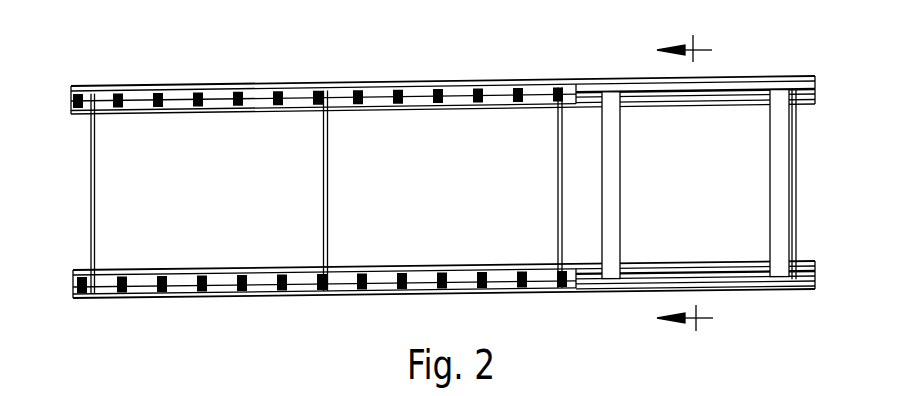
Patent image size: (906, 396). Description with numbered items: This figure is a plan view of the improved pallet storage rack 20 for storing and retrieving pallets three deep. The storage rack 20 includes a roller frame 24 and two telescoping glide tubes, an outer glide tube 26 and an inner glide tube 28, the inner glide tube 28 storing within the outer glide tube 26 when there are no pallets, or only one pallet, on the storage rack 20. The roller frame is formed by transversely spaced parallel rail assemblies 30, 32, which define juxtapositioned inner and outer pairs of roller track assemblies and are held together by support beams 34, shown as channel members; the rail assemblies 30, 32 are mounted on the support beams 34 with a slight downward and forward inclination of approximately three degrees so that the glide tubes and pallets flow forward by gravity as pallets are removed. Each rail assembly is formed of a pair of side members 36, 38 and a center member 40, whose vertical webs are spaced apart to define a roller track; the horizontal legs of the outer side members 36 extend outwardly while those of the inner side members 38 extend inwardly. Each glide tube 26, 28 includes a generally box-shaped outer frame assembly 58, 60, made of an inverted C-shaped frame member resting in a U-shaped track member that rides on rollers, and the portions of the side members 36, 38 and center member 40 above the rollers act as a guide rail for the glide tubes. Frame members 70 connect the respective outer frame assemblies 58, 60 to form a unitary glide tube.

The pallet storage rack 20 is at (372, 41).
The roller frame 24 is at (220, 84).
The outer glide tube 26 is at (816, 80).
The inner glide tube 28 is at (816, 97).
The rail assembly 30 is at (533, 78).
The rail assembly 32 is at (540, 294).
The support beam 34 is at (90, 238).
The outer side member 36 is at (76, 87).
The inner side member 38 is at (80, 117).
The center member 40 is at (78, 111).
The outer frame assembly 58 is at (813, 145).
The outer frame assembly 60 is at (811, 266).
The frame member 70 is at (608, 157).